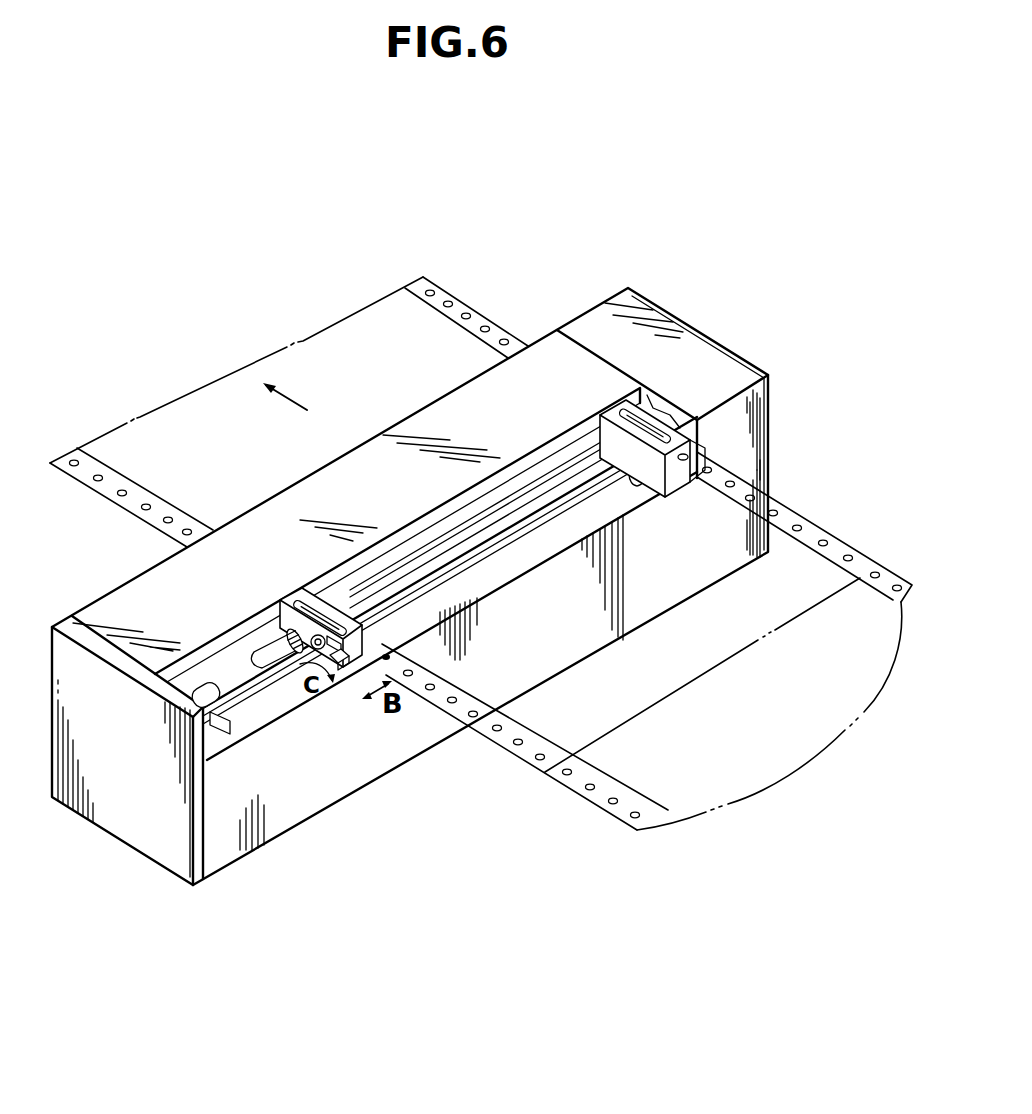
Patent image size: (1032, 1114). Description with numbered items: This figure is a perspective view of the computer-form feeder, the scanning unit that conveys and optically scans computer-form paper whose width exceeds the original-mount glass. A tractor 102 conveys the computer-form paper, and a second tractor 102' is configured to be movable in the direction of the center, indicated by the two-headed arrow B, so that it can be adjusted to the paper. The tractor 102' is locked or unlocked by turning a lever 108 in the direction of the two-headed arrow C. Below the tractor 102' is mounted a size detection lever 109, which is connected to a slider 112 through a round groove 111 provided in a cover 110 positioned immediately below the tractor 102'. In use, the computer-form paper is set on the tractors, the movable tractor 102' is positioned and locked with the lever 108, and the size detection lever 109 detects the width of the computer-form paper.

The tractor 102 is at (672, 385).
The tractor 102' is at (205, 606).
The lever 108 is at (350, 672).
The size detection lever 109 is at (327, 652).
The cover 110 is at (280, 813).
The round groove 111 is at (307, 662).
The slider 112 is at (232, 727).